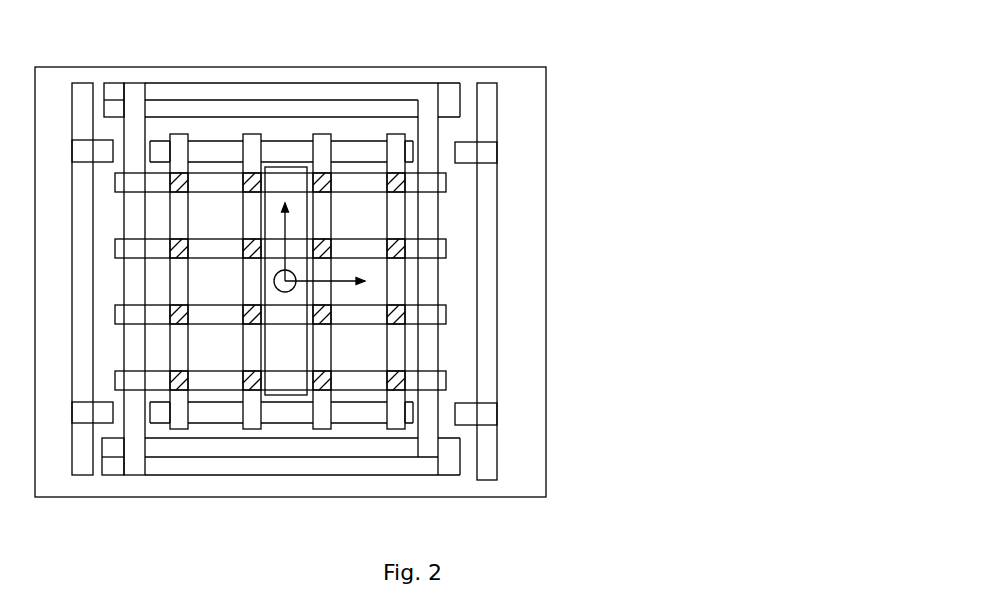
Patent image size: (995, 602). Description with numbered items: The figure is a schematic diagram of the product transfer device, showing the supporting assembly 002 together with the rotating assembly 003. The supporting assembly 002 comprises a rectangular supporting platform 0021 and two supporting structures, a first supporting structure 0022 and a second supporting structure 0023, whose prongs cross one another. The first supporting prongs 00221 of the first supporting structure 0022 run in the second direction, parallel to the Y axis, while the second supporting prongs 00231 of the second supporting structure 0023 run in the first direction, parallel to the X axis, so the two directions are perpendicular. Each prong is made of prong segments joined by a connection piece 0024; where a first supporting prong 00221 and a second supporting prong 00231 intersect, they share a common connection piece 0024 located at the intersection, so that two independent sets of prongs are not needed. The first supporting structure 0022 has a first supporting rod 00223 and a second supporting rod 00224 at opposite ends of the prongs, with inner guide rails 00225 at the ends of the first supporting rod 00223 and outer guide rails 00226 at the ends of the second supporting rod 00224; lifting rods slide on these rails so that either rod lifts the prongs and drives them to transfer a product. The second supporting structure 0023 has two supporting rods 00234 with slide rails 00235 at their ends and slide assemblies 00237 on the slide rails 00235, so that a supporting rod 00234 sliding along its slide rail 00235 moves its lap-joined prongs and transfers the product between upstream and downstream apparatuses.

The supporting assembly 002 is at (665, 217).
The supporting platform 0021 is at (520, 217).
The first supporting structure 0022 is at (678, 38).
The first supporting prong 00221 is at (423, 183).
The first supporting rod 00223 is at (429, 128).
The second supporting rod 00224 is at (135, 127).
The inner guide rail 00225 is at (445, 111).
The outer guide rail 00226 is at (445, 90).
The second supporting structure 0023 is at (678, 360).
The second supporting prong 00231 is at (392, 361).
The supporting rod 00234 is at (368, 413).
The slide rail 00235 is at (484, 455).
The slide assembly 00237 is at (468, 420).
The connection piece 0024 is at (395, 251).
The rotating assembly 003 is at (280, 350).